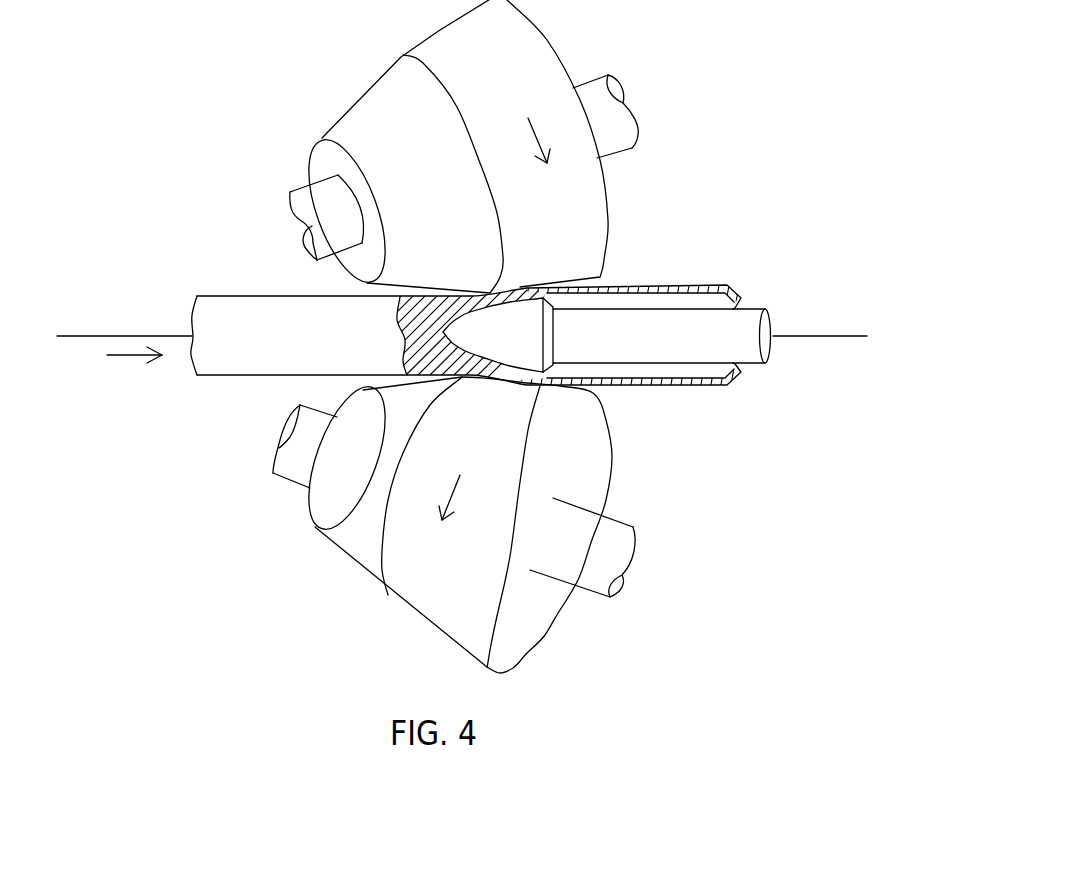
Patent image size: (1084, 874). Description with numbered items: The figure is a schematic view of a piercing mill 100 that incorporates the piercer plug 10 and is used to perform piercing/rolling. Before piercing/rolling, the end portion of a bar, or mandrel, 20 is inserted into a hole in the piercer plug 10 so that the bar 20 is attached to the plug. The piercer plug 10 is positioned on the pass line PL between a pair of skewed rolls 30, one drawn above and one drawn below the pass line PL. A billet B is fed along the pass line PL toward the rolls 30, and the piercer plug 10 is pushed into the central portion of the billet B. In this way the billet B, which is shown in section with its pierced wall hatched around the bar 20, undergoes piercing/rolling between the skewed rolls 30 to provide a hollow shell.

The piercing mill 100 is at (763, 26).
The skewed rolls 30 is at (392, 100).
The piercer plug 10 is at (510, 323).
The bar (mandrel) 20 is at (697, 320).
The billet B is at (202, 318).
The pass line PL is at (78, 335).